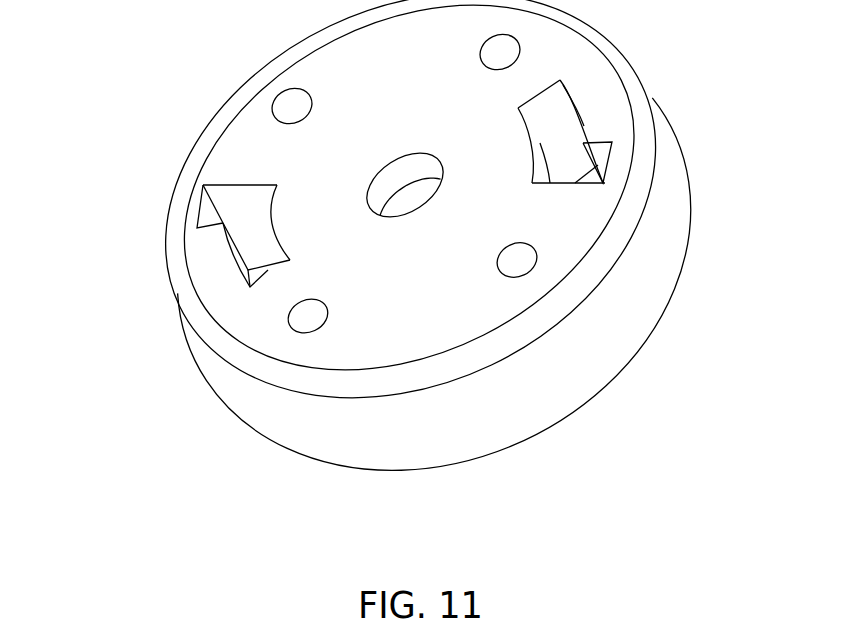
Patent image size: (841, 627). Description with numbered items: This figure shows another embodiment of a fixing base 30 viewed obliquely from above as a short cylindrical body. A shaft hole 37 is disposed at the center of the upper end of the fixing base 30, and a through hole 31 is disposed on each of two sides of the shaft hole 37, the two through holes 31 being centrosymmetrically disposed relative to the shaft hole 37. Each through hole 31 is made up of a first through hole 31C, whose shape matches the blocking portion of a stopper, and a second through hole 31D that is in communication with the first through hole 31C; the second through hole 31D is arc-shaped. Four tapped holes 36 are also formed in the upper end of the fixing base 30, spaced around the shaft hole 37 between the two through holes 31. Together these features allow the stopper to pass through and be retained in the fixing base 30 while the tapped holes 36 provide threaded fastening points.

The fixing base 30 is at (435, 529).
The through hole 31 is at (252, 247).
The first through hole 31C is at (228, 203).
The second through hole 31D is at (248, 270).
The tapped hole 36 is at (497, 53).
The shaft hole 37 is at (390, 192).